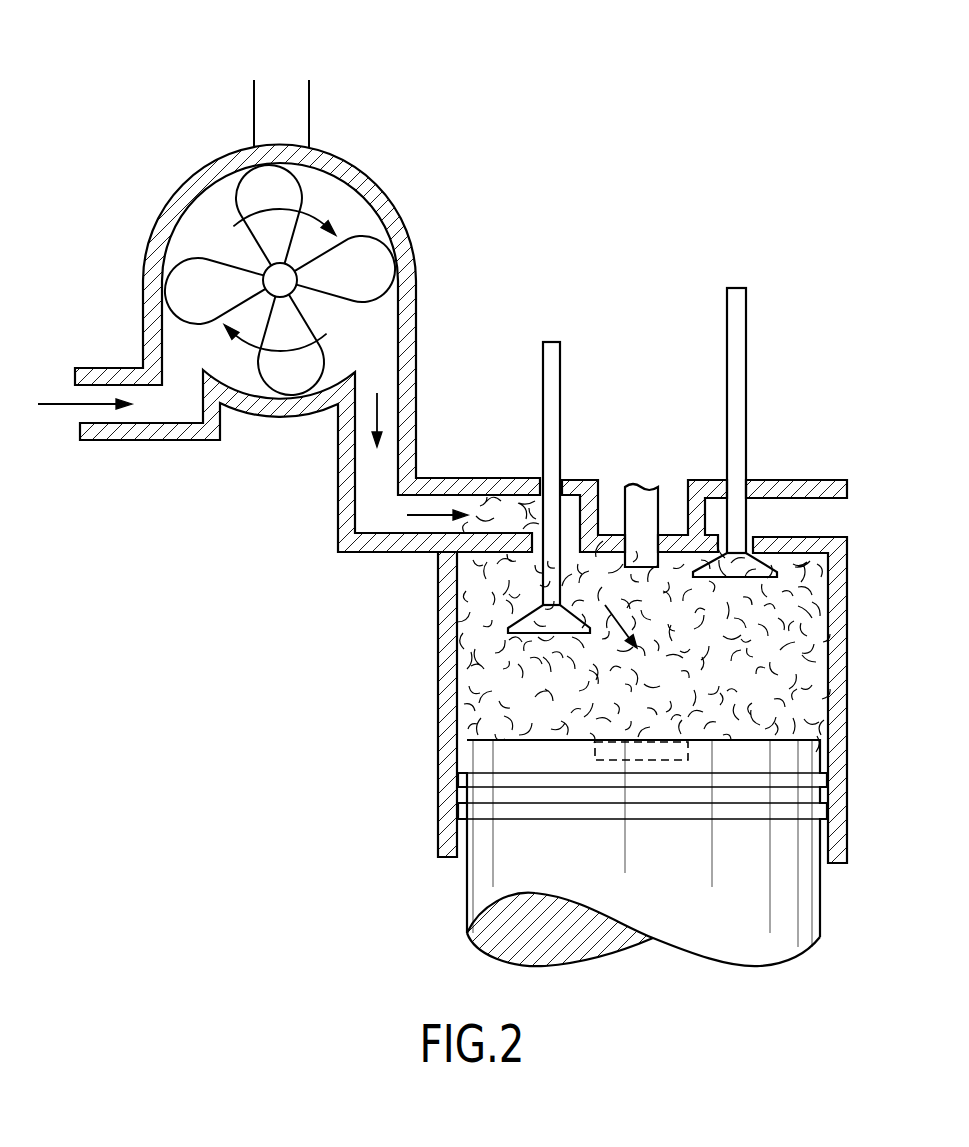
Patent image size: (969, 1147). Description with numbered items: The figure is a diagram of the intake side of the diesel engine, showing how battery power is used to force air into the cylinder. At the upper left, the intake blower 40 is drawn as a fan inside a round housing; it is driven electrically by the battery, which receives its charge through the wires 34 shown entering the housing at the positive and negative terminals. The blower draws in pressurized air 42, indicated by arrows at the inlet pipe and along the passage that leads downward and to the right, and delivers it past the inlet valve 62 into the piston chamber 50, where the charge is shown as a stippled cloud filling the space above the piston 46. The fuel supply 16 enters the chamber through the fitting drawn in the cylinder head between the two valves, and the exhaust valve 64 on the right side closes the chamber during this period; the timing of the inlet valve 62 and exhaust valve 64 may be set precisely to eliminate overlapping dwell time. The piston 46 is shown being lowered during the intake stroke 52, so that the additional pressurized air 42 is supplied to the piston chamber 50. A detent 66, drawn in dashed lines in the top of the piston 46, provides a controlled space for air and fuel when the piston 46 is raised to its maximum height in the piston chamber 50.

The fuel supply 16 is at (658, 490).
The wires 34 is at (309, 90).
The intake blower 40 is at (362, 172).
The pressurized air 42 is at (83, 440).
The piston 46 is at (782, 943).
The piston chamber 50 is at (493, 692).
The intake stroke 52 is at (417, 798).
The inlet valve 62 is at (560, 345).
The exhaust valve 64 is at (747, 303).
The detent 66 is at (643, 760).